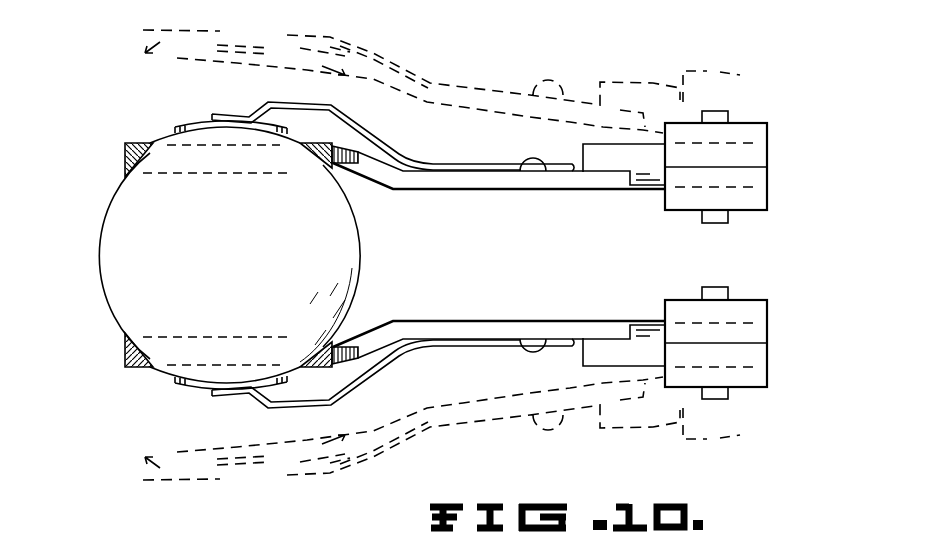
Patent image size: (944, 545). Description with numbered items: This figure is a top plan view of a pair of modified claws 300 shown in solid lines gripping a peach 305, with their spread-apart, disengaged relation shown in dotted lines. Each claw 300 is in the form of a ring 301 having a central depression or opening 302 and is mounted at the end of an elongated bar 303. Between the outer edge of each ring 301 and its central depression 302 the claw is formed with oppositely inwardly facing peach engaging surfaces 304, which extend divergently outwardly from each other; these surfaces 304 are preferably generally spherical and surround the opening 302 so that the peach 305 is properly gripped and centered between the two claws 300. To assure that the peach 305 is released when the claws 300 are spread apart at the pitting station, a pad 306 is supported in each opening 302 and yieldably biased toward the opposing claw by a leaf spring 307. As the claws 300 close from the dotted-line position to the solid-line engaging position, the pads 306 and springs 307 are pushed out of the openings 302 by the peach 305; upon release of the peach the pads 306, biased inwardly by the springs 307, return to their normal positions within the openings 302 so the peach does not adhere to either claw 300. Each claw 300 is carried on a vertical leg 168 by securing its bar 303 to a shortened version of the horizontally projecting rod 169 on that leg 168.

The vertical leg 168 is at (751, 202).
The horizontally projecting rod 169 is at (650, 190).
The claw 300 is at (120, 120).
The ring 301 is at (144, 27).
The central depression or opening 302 is at (294, 146).
The elongated bar 303 is at (485, 97).
The peach engaging surfaces 304 is at (142, 167).
The peach 305 is at (356, 237).
The pad 306 is at (190, 124).
The leaf spring 307 is at (376, 136).